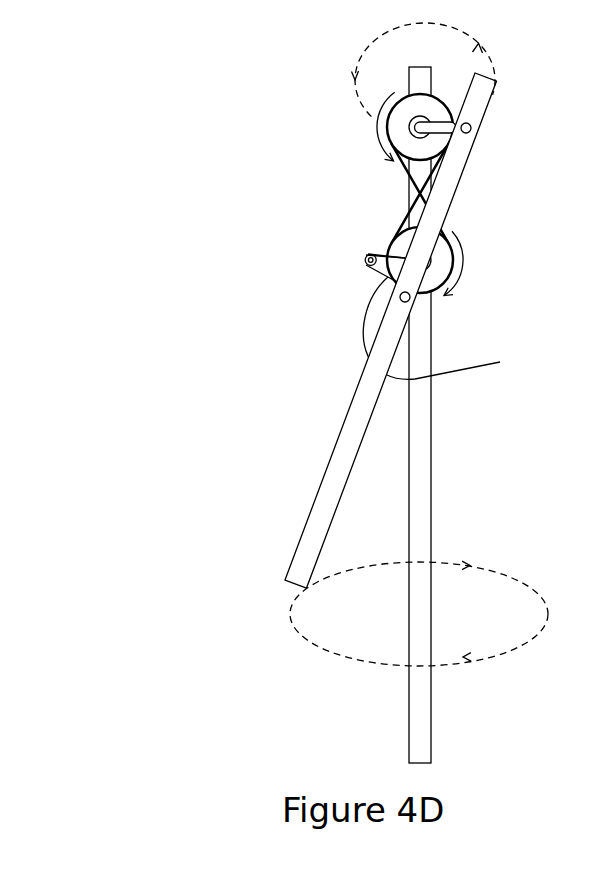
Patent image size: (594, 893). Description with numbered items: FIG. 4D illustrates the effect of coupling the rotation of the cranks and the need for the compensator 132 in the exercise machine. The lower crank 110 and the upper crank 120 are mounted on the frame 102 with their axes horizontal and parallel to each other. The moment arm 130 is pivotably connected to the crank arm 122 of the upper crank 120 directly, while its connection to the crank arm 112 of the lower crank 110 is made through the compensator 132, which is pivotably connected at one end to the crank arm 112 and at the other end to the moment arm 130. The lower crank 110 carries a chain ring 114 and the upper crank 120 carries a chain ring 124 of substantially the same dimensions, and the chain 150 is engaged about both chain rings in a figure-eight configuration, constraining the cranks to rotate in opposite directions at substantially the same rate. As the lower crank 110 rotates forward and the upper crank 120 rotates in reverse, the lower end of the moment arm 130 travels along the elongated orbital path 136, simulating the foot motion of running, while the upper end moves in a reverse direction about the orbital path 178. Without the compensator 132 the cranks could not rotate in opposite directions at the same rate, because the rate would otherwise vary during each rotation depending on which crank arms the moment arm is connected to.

The frame 102 is at (418, 695).
The lower crank 110 is at (405, 258).
The right crank arm of lower crank 112 is at (390, 253).
The chain ring 114 is at (445, 262).
The upper crank 120 is at (410, 130).
The right crank arm of upper crank 122 is at (440, 128).
The chain ring 124 is at (428, 113).
The moment arm 130 is at (350, 442).
The compensator 132 is at (454, 328).
The orbital path 136 is at (352, 647).
The chain 150 is at (418, 202).
The orbital path 178 is at (350, 54).